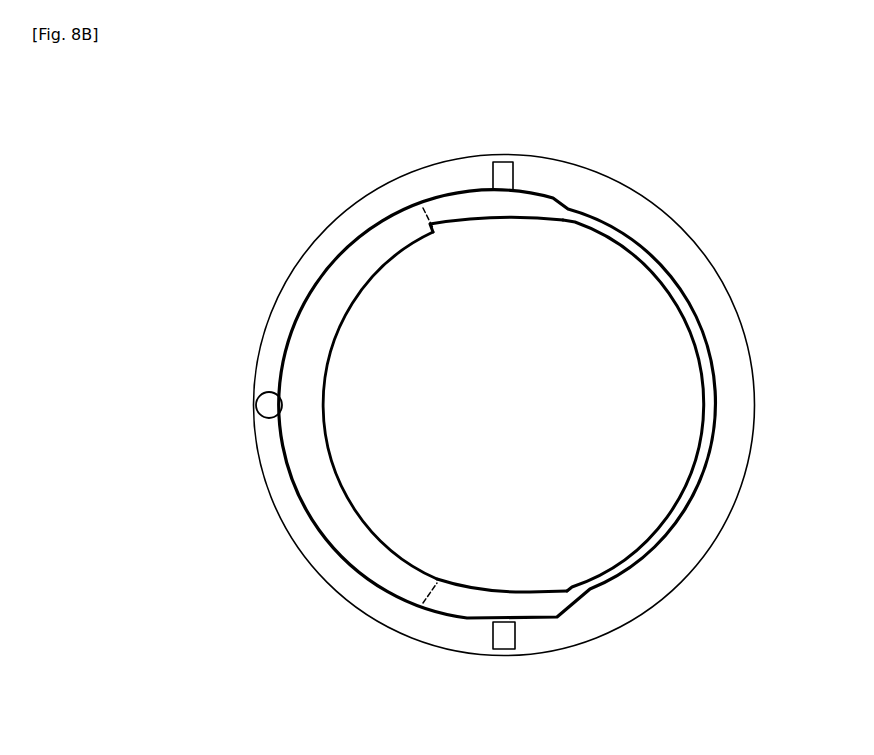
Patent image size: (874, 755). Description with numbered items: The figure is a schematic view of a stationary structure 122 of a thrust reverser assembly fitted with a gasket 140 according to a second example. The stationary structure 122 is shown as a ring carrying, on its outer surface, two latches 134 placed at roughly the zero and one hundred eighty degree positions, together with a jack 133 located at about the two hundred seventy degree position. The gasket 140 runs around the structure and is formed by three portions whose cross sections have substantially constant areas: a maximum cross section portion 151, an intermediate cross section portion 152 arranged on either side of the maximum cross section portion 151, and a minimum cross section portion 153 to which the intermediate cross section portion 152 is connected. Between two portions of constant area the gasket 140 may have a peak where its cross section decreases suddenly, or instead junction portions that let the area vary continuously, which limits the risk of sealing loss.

The stationary structure 122 is at (645, 612).
The jack 133 is at (263, 392).
The latch 134 is at (506, 162).
The gasket 140 is at (320, 266).
The maximum cross section portion 151 is at (317, 330).
The intermediate cross section portion 152 is at (478, 207).
The minimum cross section portion 153 is at (675, 290).